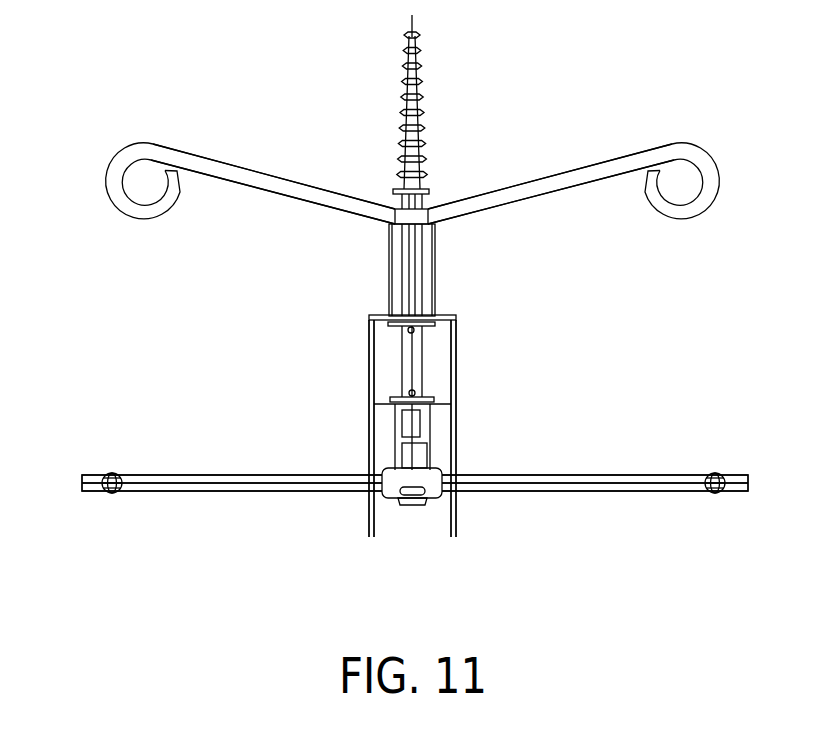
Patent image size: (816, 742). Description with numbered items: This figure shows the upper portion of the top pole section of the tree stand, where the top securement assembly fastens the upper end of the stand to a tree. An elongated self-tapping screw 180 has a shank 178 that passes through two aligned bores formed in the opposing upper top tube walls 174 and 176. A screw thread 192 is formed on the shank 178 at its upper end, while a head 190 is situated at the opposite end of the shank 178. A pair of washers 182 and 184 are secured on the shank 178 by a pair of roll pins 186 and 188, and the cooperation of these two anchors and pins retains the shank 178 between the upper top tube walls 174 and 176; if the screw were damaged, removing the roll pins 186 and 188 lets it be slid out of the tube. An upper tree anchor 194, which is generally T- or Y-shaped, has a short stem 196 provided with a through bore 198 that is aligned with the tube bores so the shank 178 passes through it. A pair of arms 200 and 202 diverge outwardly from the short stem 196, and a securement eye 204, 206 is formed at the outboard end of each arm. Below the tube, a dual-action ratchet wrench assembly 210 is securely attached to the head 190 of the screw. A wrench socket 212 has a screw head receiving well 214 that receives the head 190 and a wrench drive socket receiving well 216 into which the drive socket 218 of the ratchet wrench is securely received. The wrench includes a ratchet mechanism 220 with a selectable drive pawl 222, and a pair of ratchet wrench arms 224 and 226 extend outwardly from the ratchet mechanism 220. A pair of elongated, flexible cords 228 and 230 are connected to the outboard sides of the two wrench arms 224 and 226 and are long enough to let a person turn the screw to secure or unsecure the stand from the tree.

The upper top tube wall 174 is at (455, 427).
The upper top tube wall 176 is at (444, 313).
The shank 178 is at (419, 355).
The self-tapping screw 180 is at (467, 262).
The washer 182 is at (436, 397).
The washer 184 is at (451, 332).
The roll pin 186 is at (409, 392).
The roll pin 188 is at (408, 330).
The head 190 is at (416, 423).
The screw thread 192 is at (441, 114).
The upper tree anchor 194 is at (208, 149).
The short stem 196 is at (437, 242).
The through bore 198 is at (388, 250).
The arm 200 is at (590, 172).
The arm 202 is at (293, 187).
The securement eye 204 is at (708, 202).
The securement eye 206 is at (115, 181).
The dual-action ratchet wrench assembly 210 is at (284, 507).
The wrench socket 212 is at (395, 443).
The screw head receiving well 214 is at (402, 435).
The wrench drive socket receiving well 216 is at (428, 455).
The drive socket 218 is at (452, 472).
The ratchet mechanism 220 is at (432, 498).
The selectable drive pawl 222 is at (408, 507).
The ratchet wrench arm 224 is at (596, 496).
The ratchet wrench arm 226 is at (202, 496).
The flexible cord 228 is at (715, 494).
The flexible cord 230 is at (112, 494).